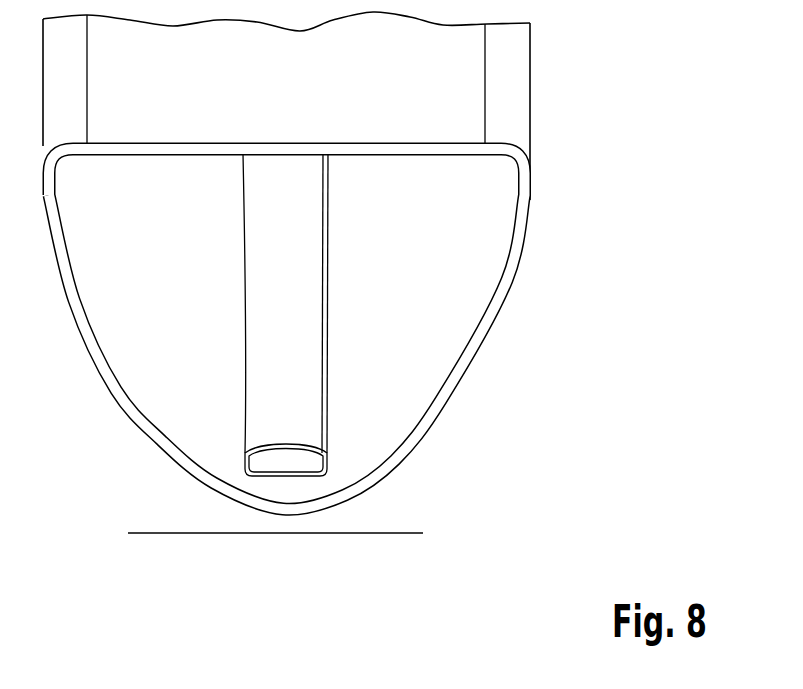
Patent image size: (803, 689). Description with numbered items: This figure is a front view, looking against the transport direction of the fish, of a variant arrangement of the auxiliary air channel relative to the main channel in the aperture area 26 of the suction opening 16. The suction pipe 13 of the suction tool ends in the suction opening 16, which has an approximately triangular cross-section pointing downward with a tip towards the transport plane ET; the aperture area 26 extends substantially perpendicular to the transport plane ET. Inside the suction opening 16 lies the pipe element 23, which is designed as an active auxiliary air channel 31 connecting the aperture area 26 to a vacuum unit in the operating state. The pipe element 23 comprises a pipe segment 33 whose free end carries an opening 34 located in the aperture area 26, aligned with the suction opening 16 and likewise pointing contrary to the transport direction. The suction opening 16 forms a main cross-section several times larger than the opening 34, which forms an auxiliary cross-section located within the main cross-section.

The suction pipe 13 is at (515, 142).
The suction opening 16 is at (445, 322).
The pipe element 23 is at (287, 300).
The aperture area 26 is at (287, 300).
The active auxiliary air channel 31 is at (297, 347).
The pipe segment 33 is at (273, 208).
The opening 34 is at (298, 462).
The transport plane ET is at (185, 533).